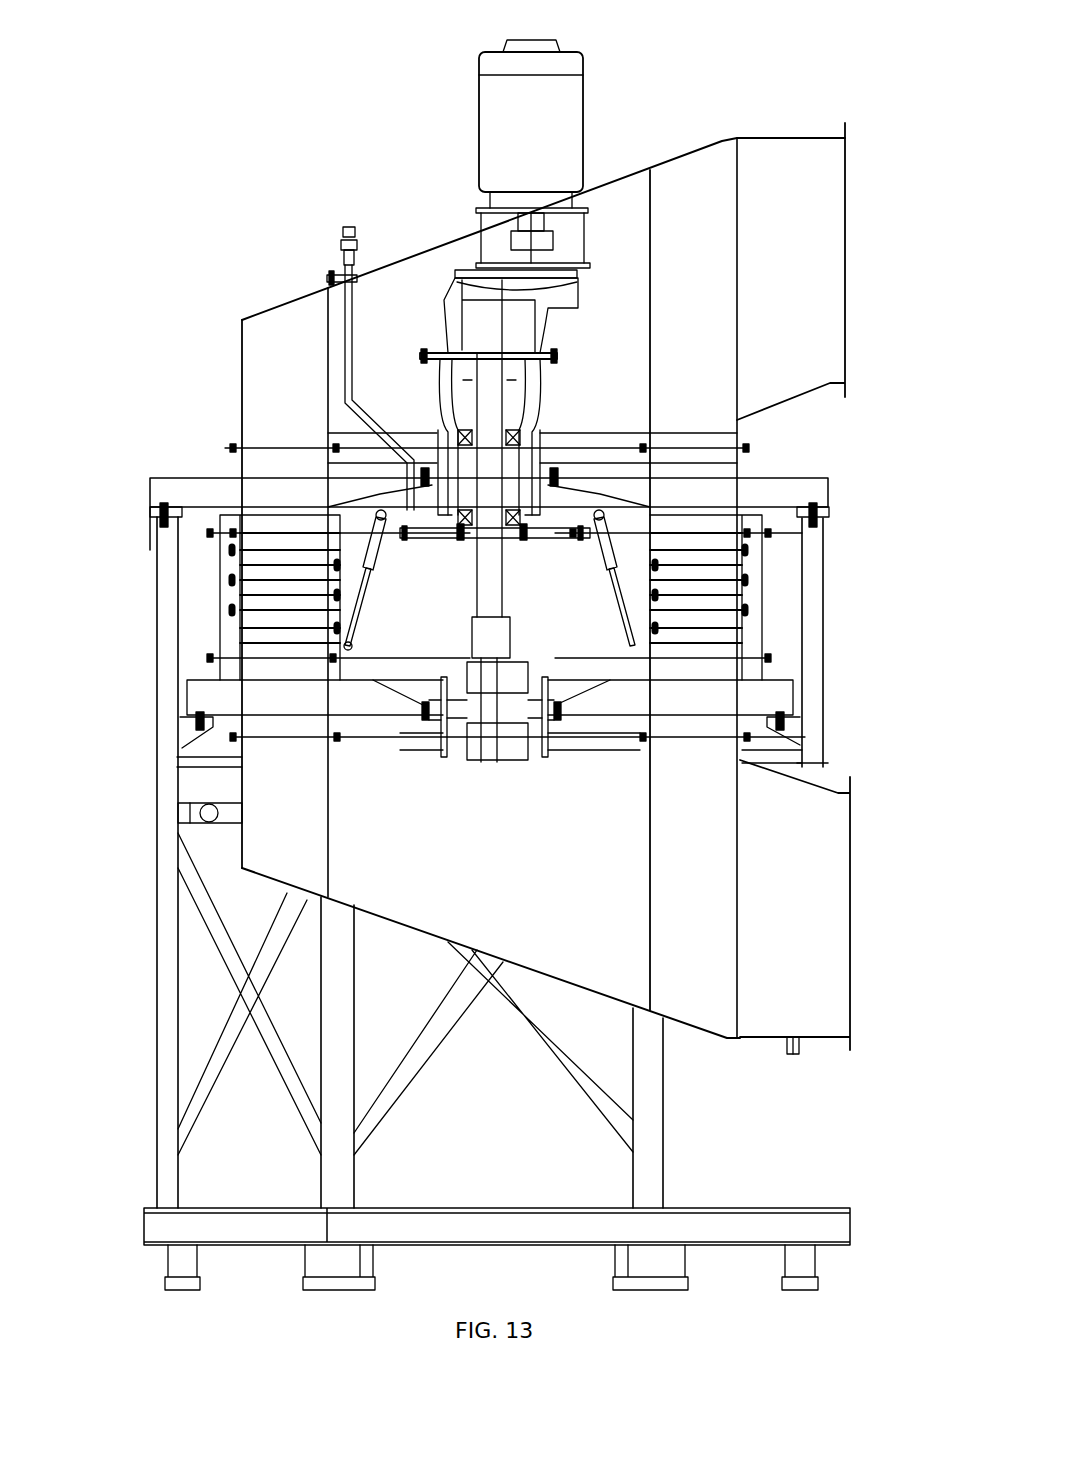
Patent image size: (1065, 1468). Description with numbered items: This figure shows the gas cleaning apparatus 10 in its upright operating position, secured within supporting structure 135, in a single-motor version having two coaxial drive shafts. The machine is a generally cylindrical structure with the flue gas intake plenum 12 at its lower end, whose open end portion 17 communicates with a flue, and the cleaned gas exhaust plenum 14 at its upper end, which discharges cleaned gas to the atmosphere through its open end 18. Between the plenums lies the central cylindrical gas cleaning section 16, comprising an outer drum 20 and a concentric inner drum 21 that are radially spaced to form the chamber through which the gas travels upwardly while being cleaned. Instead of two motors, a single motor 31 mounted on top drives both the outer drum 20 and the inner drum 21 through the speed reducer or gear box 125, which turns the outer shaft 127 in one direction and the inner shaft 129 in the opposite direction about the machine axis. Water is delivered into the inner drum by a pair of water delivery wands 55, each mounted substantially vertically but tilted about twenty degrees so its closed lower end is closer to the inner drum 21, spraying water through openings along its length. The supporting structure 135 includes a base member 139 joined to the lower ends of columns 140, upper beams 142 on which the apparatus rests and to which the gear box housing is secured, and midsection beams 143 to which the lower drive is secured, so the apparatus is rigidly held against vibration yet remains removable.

The apparatus 10 is at (213, 323).
The flue gas intake plenum 12 is at (426, 932).
The cleaned gas exhaust plenum 14 is at (428, 247).
The central cylindrical gas cleaning section 16 is at (763, 605).
The open end portion 17 is at (852, 857).
The open end 18 is at (846, 200).
The outer drum 20 is at (233, 583).
The inner drum 21 is at (336, 625).
The motor 31 is at (480, 122).
The water delivery wand 55 is at (363, 613).
The gear box 125 is at (549, 318).
The outer shaft 127 is at (500, 572).
The inner shaft 129 is at (498, 713).
The supporting structure 135 is at (152, 1010).
The base member 139 is at (148, 1226).
The columns 140 is at (825, 690).
The beams 142 is at (176, 490).
The midsection beams 143 is at (187, 697).